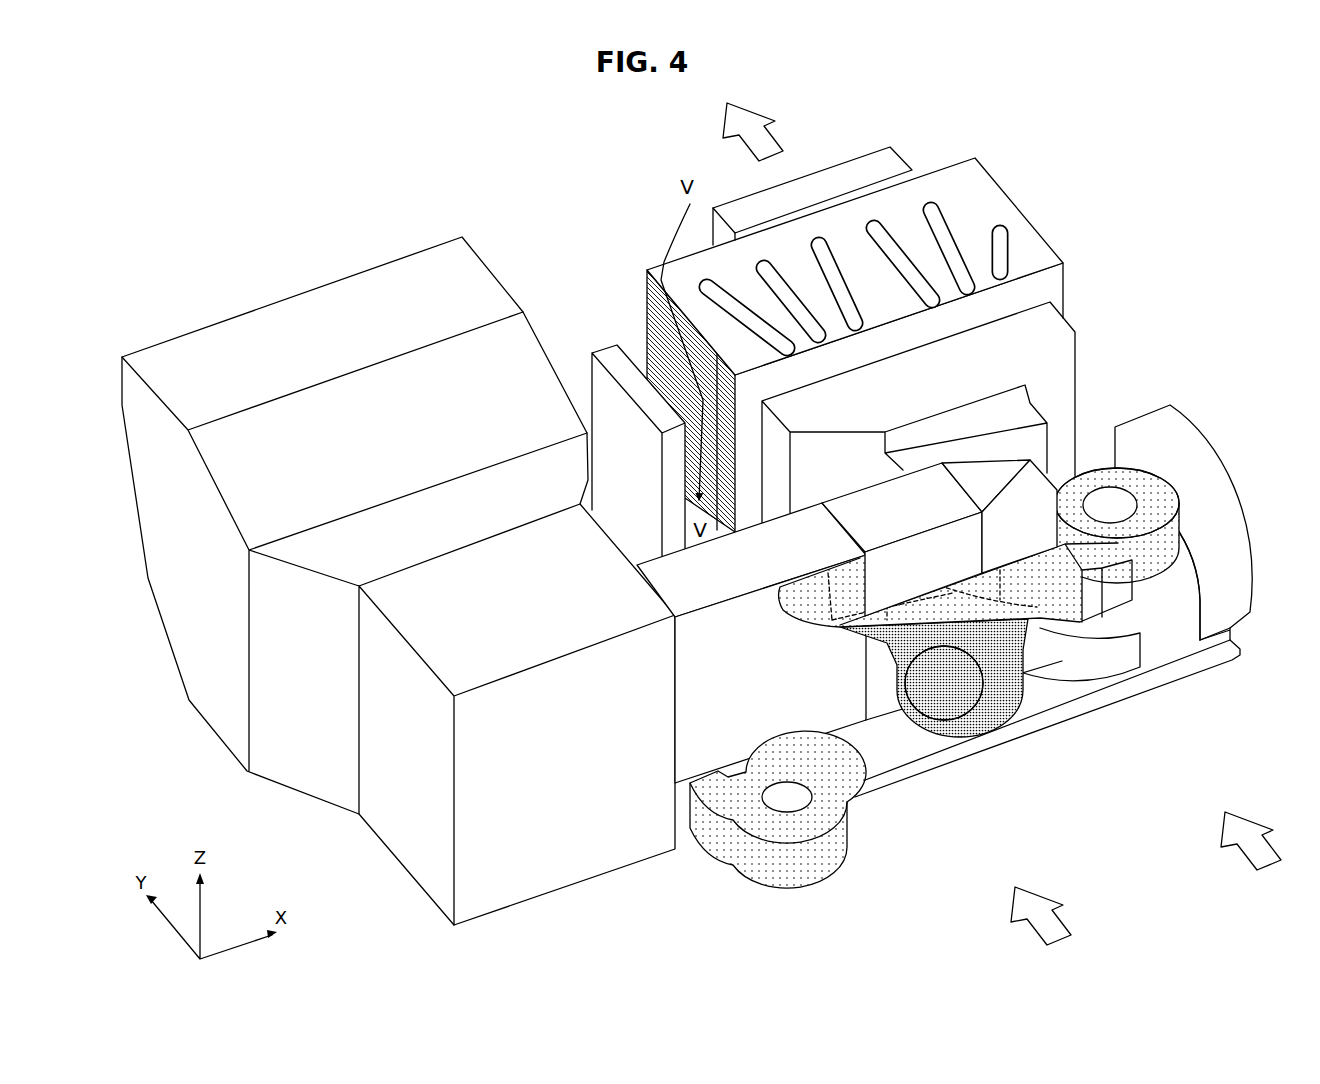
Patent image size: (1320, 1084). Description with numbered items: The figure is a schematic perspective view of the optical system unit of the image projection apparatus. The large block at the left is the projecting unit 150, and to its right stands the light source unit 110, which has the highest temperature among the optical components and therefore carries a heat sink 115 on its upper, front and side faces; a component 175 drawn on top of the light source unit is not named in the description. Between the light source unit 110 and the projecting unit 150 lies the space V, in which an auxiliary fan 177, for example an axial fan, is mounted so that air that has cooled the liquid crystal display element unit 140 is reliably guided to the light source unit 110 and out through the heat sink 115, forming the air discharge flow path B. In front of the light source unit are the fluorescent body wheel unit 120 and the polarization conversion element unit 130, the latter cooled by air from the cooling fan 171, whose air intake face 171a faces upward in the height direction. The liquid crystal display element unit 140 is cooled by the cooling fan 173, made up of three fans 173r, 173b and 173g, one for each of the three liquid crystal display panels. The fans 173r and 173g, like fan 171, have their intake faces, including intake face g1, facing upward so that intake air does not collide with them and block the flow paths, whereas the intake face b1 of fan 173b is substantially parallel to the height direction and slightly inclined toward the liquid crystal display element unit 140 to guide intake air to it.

The light source unit 110 is at (882, 314).
The heat sink 115 is at (952, 193).
The fluorescent body wheel unit 120 is at (1022, 413).
The polarization conversion element unit 130 is at (960, 503).
The liquid crystal display element unit 140 is at (700, 743).
The projecting unit 150 is at (292, 315).
The cooling fan 171 is at (1138, 587).
The air intake face 171a is at (1197, 590).
The cooling fan 173 is at (944, 664).
The cooling fan 173r is at (1145, 582).
The cooling fan 173b is at (934, 743).
The cooling fan 173g is at (778, 840).
The protrusion 175 is at (858, 172).
The auxiliary fan 177 is at (612, 345).
The air intake face b1 is at (993, 703).
The air intake face g1 is at (758, 820).